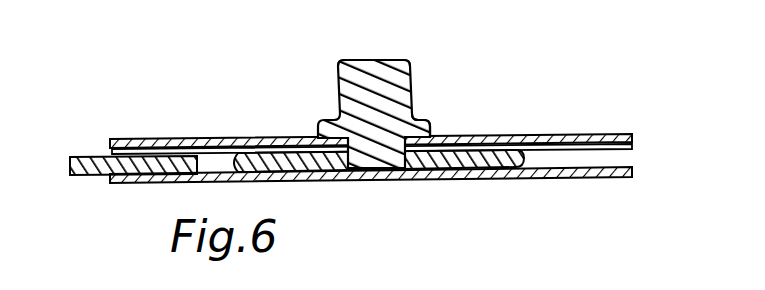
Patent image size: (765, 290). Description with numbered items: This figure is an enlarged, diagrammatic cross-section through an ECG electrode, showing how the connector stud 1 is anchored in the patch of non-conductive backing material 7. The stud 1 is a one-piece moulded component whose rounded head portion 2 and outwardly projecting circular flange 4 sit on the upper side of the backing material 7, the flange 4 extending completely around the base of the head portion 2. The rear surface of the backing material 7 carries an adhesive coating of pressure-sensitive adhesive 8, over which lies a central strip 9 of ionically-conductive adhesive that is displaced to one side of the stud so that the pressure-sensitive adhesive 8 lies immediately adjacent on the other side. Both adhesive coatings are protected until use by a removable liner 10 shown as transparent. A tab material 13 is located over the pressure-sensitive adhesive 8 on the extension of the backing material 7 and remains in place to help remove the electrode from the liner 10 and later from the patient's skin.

The connector stud 1 is at (335, 56).
The head portion 2 is at (397, 63).
The flange 4 is at (431, 126).
The backing material 7 is at (632, 138).
The pressure-sensitive adhesive 8 is at (632, 146).
The strip of ionically-conductive adhesive 9 is at (523, 155).
The removable liner 10 is at (632, 172).
The tab material 13 is at (90, 156).